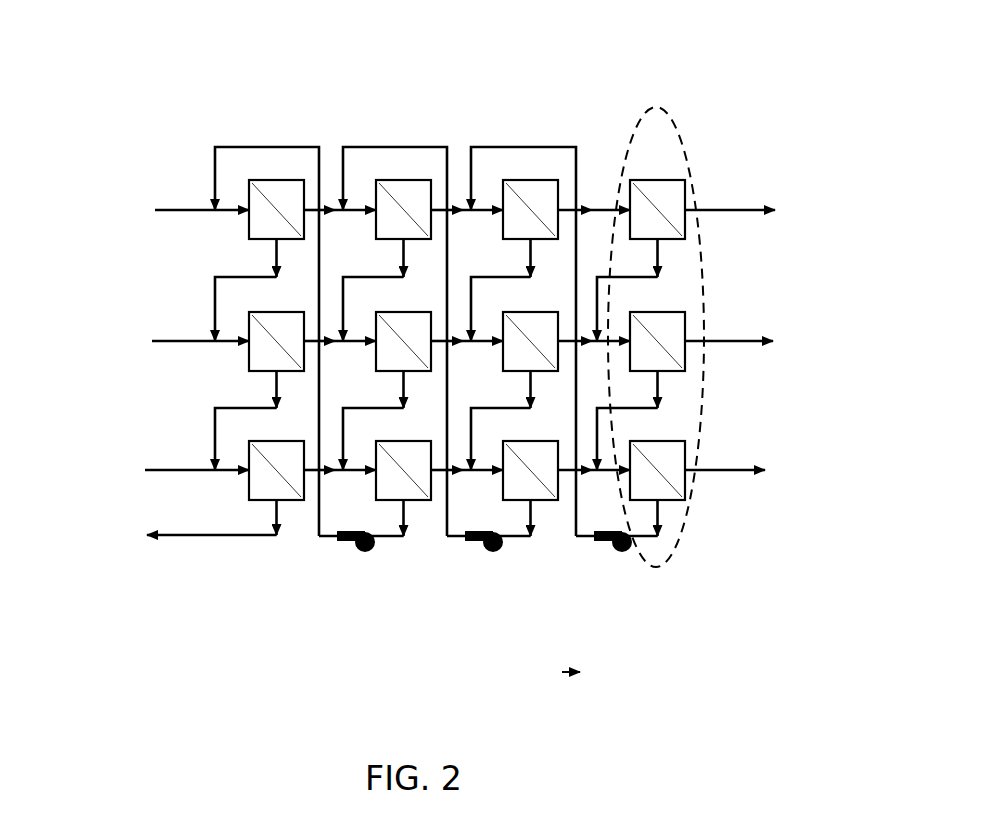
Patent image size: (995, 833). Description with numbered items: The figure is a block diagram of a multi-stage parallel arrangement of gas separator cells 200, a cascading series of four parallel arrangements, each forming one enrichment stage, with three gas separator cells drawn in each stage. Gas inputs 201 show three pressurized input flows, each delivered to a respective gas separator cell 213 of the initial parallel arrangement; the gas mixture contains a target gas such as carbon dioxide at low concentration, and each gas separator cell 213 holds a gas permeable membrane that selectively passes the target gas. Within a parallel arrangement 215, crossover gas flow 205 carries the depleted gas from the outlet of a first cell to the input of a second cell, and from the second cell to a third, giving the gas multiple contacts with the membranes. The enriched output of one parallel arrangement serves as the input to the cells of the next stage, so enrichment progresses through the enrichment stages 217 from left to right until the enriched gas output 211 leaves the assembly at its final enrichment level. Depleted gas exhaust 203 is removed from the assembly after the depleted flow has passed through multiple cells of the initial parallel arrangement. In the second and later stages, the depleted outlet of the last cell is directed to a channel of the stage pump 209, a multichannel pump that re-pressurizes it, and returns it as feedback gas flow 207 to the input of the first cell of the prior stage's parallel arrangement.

The multi-stage parallel arrangement of gas separator cells 200 is at (449, 318).
The gas inputs 201 is at (163, 465).
The depleted gas exhaust 203 is at (202, 541).
The crossover gas flow 205 is at (226, 271).
The feedback gas flow 207 is at (450, 543).
The stage pump 209 is at (363, 558).
The enriched gas output 211 is at (755, 211).
The gas separator cell 213 is at (393, 172).
The parallel arrangement 215 is at (680, 132).
The enrichment stages 217 is at (456, 673).